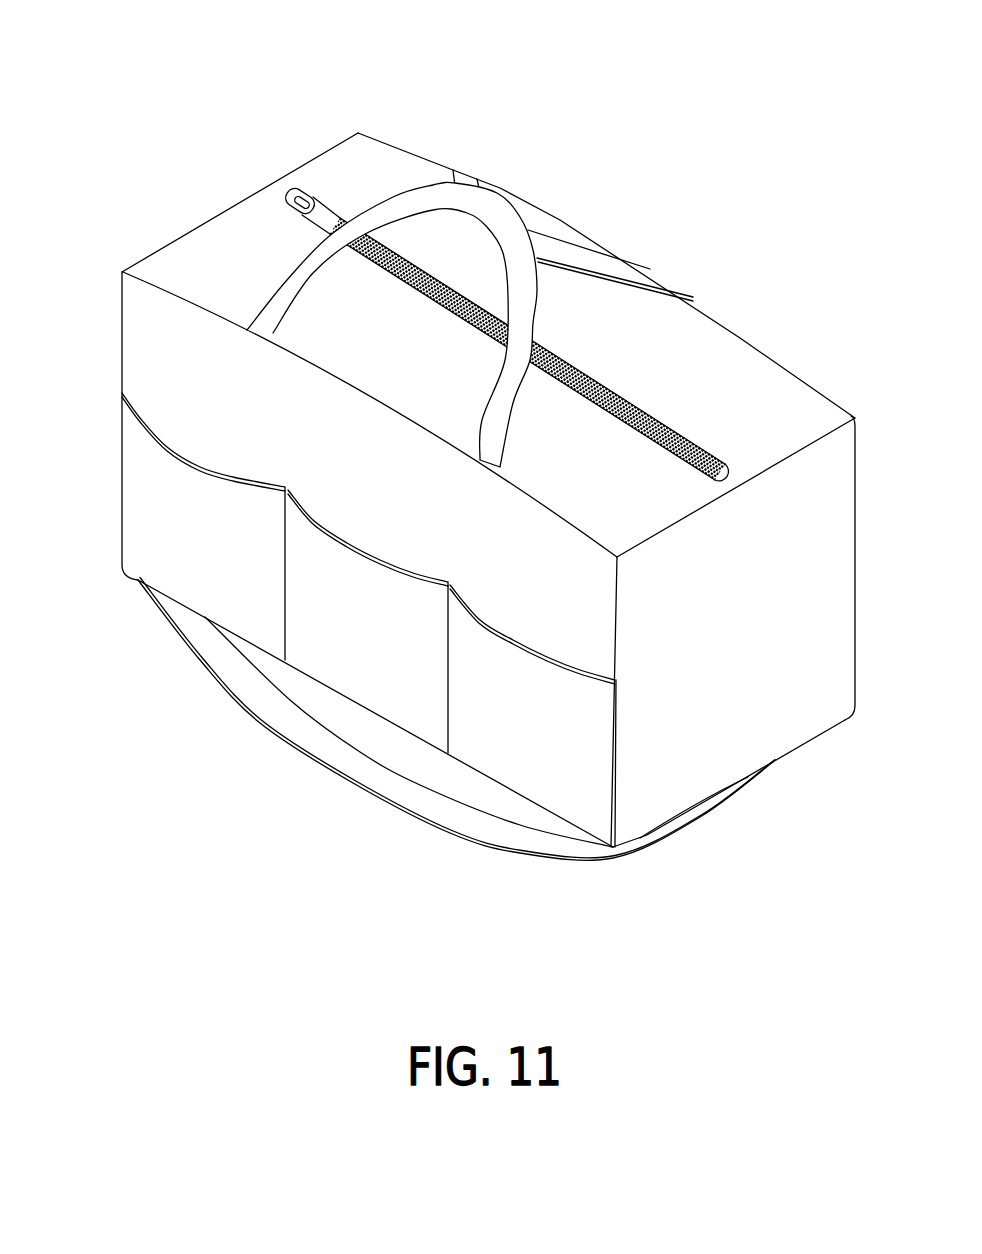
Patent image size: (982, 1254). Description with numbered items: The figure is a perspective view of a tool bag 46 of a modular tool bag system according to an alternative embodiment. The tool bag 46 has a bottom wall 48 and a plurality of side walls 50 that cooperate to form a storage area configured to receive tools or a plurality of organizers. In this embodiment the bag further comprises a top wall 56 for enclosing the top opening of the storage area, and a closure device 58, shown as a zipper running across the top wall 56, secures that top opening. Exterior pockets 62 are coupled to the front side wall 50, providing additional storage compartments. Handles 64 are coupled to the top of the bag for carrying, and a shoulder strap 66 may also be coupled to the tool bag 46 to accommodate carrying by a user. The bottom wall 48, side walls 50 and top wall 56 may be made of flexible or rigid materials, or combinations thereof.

The tool bag 46 is at (218, 105).
The bottom wall 48 is at (642, 883).
The side walls 50 is at (588, 618).
The top wall 56 is at (397, 170).
The closure device 58 is at (693, 438).
The exterior pockets 62 is at (510, 750).
The handles 64 is at (518, 343).
The shoulder strap 66 is at (177, 613).